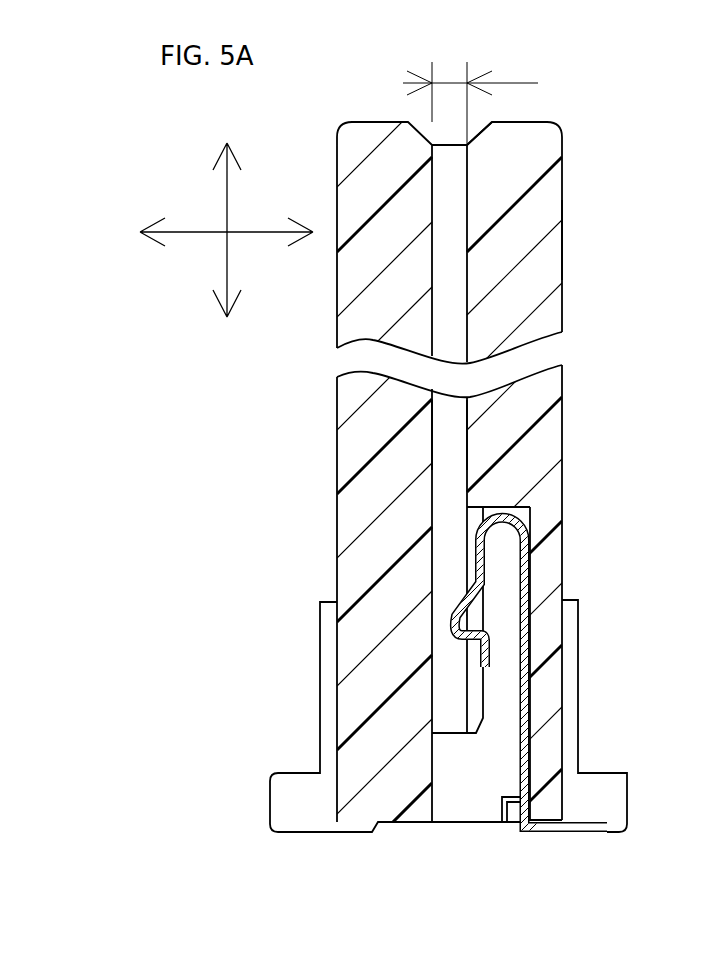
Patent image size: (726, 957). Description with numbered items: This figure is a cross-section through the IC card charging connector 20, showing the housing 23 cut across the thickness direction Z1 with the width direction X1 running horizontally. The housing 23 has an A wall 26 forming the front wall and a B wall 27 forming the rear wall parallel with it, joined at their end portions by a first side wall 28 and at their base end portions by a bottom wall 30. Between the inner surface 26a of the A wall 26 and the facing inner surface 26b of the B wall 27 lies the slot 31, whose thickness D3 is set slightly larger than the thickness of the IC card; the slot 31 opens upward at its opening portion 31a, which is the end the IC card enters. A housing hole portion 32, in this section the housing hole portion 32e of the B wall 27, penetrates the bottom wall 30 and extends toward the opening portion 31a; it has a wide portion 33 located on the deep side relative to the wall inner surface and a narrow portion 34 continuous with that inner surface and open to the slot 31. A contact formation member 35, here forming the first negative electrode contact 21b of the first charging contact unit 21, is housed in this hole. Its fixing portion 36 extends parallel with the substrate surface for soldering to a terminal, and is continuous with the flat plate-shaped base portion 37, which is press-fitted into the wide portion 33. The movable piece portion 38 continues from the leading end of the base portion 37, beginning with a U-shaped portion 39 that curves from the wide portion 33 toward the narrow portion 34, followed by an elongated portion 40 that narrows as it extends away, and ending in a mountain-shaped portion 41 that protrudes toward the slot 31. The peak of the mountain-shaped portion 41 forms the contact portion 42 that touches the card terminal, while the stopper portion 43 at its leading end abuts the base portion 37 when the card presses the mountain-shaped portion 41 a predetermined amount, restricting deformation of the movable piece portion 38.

The IC card charging connector 20 is at (447, 468).
The housing 23 is at (560, 236).
The A wall 26 is at (358, 318).
The inner surface of the A wall 26a is at (420, 432).
The slot facing surface 26b is at (468, 460).
The B wall 27 is at (560, 325).
The first side wall 28 is at (455, 197).
The slot 31 is at (467, 188).
The opening portion 31a is at (478, 124).
The thickness of the slot D3 is at (470, 101).
The width direction X1 is at (253, 234).
The thickness direction Z1 is at (228, 275).
The first charging contact unit 21 is at (485, 691).
The first negative electrode contact 21b is at (540, 570).
The bottom wall 30 is at (385, 803).
The wide portion 33 is at (522, 788).
The narrow portion 34 is at (505, 612).
The base portion 37 is at (540, 698).
The movable piece portion 38 is at (468, 558).
The housing hole portion 32 is at (494, 672).
The housing hole portion 32e is at (530, 770).
The contact formation member 35 is at (515, 507).
The fixing portion 36 is at (555, 833).
The U-shaped portion 39 is at (480, 518).
The elongated portion 40 is at (476, 576).
The mountain-shaped portion 41 is at (456, 604).
The contact portion 42 is at (452, 620).
The stopper portion 43 is at (488, 656).